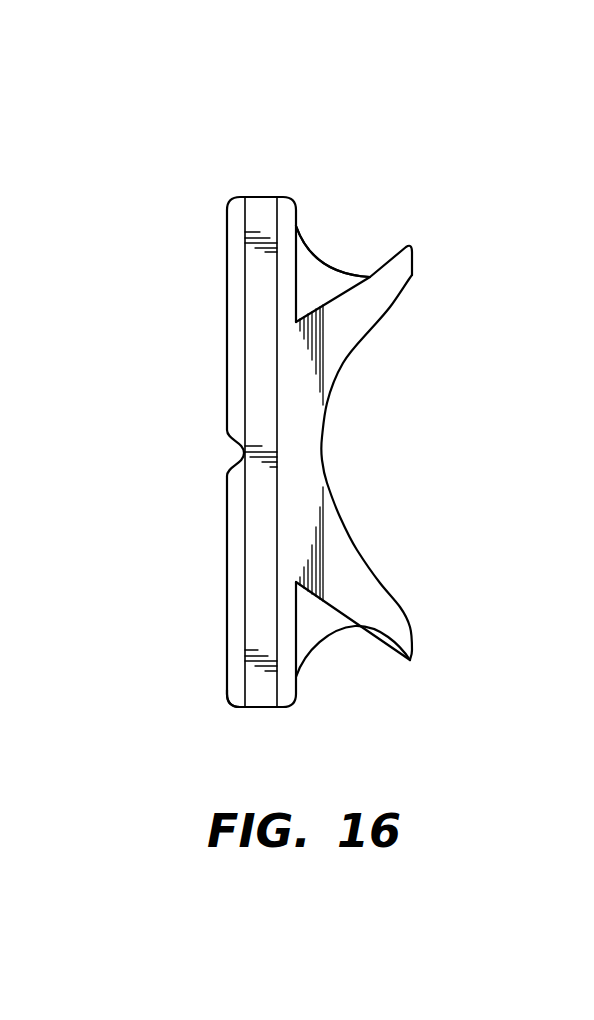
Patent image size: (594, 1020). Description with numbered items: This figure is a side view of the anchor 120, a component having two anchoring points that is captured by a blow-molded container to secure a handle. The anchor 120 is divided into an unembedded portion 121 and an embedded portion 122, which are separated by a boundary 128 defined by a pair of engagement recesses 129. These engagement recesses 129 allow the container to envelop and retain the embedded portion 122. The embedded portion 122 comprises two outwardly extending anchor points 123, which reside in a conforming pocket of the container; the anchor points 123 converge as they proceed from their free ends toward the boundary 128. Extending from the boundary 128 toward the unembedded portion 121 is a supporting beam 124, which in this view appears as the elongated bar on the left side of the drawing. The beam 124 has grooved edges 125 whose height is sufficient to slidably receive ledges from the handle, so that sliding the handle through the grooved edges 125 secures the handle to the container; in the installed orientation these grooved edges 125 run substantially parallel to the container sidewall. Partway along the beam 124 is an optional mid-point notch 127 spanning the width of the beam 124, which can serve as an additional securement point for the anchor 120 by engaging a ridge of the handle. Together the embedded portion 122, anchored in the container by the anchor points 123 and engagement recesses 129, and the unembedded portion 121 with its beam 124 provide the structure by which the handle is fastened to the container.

The anchor 120 is at (443, 186).
The unembedded portion 121 is at (313, 183).
The embedded portion 122 is at (412, 183).
The anchor points 123 is at (413, 250).
The supporting beam 124 is at (227, 708).
The grooved edges 125 is at (262, 320).
The mid-point notch 127 is at (242, 465).
The boundary 128 is at (316, 216).
The engagement recesses 129 is at (323, 262).